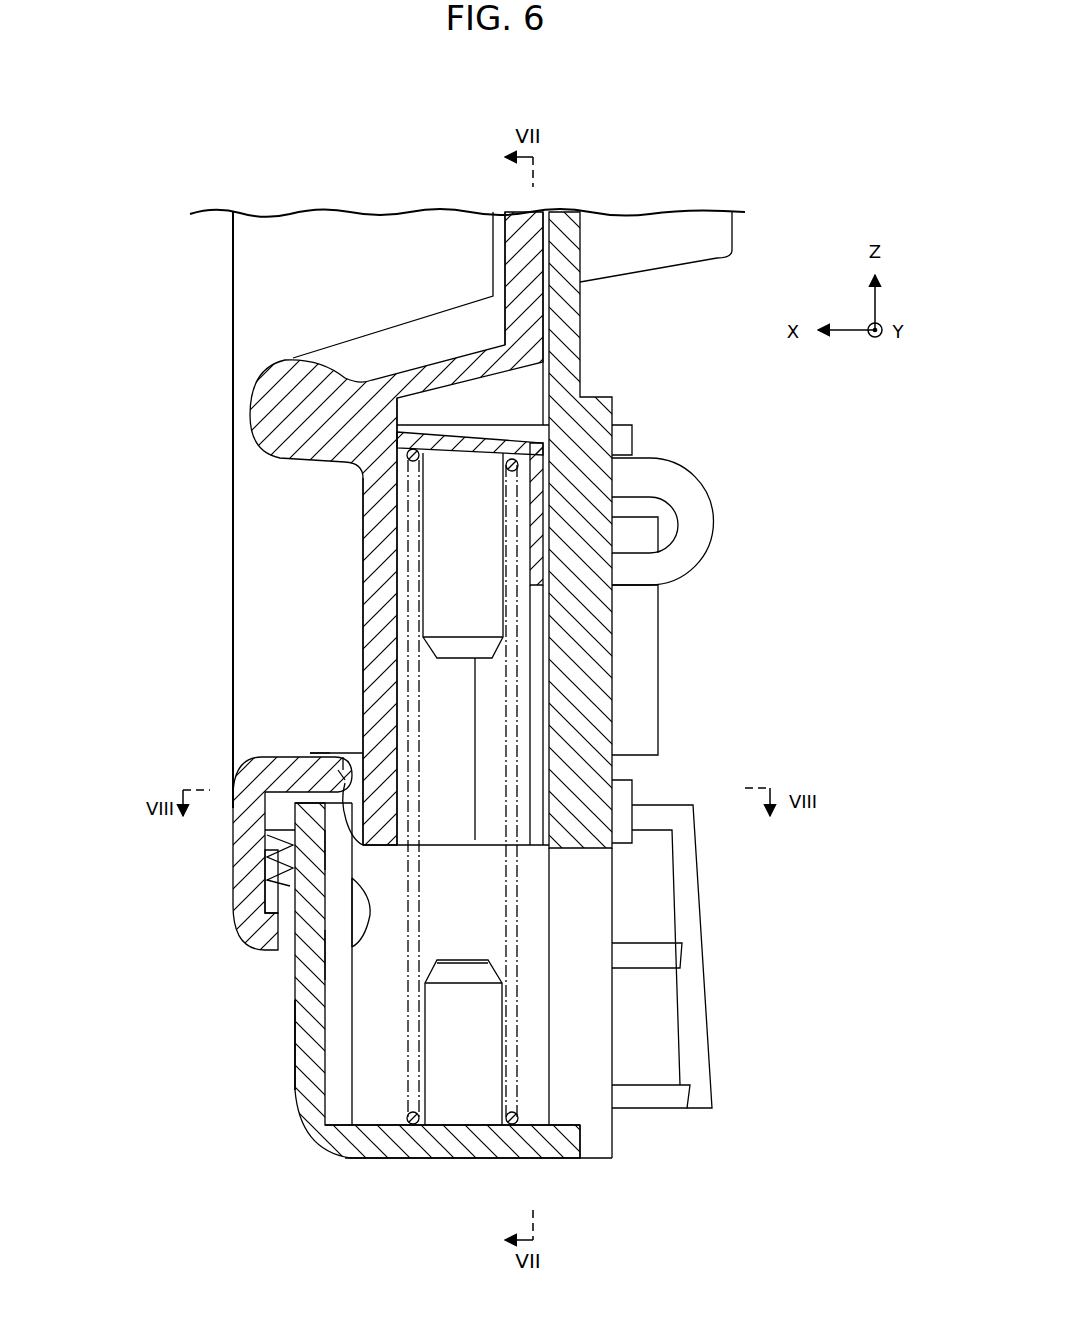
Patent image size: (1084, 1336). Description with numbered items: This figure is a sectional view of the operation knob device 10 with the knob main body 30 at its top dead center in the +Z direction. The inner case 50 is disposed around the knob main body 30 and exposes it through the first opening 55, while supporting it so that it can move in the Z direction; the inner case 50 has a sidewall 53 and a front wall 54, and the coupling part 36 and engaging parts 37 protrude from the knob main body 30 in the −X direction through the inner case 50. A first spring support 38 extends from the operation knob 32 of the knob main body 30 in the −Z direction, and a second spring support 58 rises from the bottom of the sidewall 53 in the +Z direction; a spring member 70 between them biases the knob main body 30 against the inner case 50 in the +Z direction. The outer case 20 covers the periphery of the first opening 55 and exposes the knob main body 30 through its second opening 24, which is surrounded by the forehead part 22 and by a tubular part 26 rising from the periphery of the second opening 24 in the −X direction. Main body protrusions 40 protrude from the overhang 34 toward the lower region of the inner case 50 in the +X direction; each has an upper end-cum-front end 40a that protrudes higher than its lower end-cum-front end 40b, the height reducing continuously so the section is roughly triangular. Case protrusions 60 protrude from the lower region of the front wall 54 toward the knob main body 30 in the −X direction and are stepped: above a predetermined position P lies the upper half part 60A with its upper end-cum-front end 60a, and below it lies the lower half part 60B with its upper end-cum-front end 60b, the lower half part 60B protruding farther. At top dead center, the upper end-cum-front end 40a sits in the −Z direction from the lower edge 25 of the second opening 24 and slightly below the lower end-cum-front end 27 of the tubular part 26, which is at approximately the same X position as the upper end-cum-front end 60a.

The faucet device 10 is at (237, 192).
The outer case 20 is at (335, 250).
The forehead part 22 is at (233, 593).
The second opening 24 is at (288, 635).
The lower edge 25 is at (343, 747).
The tubular part 26 is at (323, 753).
The lower end-cum-front end 27 is at (340, 770).
The knob main body 30 is at (512, 250).
The operation knob 32 is at (262, 360).
The overhang 34 is at (375, 578).
The coupling part 36 is at (672, 462).
The engaging parts 37 is at (660, 695).
The first spring support 38 is at (483, 612).
The main body protrusions 40 is at (262, 885).
The upper end-cum-front end 40a is at (355, 778).
The lower end-cum-front end 40b is at (352, 910).
The inner case 50 is at (583, 250).
The sidewall 53 is at (380, 1160).
The front wall 54 is at (200, 1056).
The first opening 55 is at (330, 848).
The second spring support 58 is at (453, 1098).
The case protrusions 60 is at (335, 1000).
The upper end-cum-front end 60a is at (345, 855).
The upper half part 60A is at (350, 880).
The upper end-cum-front end 60b is at (345, 950).
The lower half part 60B is at (322, 1025).
The spring member 70 is at (517, 768).
The predetermined position P is at (357, 880).